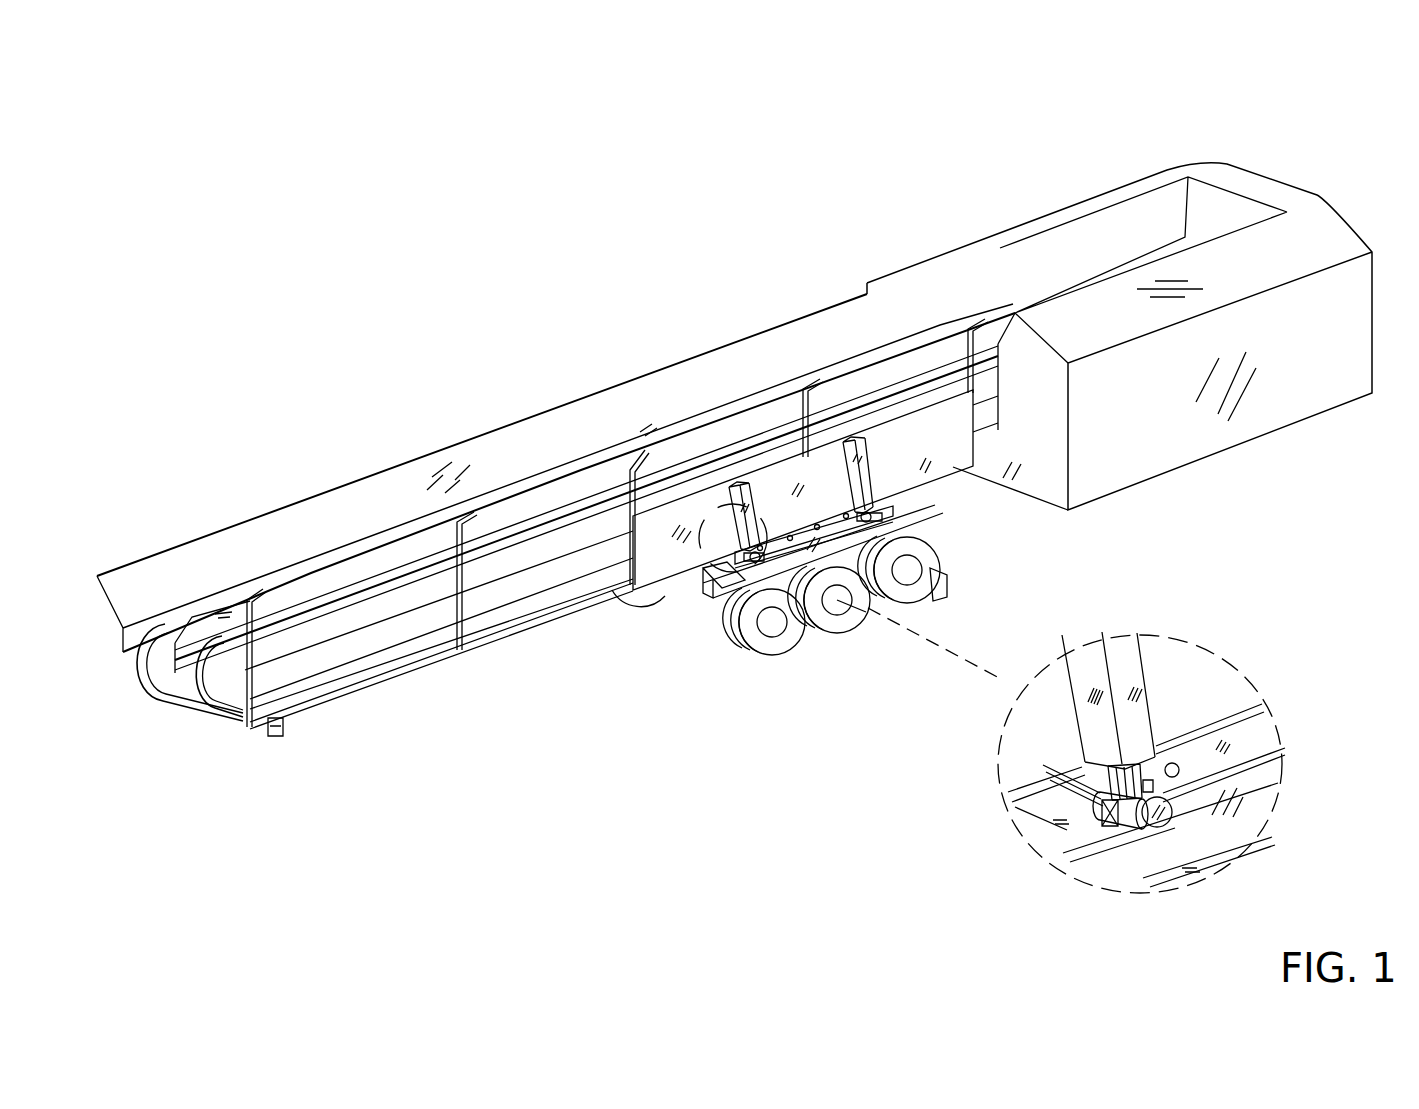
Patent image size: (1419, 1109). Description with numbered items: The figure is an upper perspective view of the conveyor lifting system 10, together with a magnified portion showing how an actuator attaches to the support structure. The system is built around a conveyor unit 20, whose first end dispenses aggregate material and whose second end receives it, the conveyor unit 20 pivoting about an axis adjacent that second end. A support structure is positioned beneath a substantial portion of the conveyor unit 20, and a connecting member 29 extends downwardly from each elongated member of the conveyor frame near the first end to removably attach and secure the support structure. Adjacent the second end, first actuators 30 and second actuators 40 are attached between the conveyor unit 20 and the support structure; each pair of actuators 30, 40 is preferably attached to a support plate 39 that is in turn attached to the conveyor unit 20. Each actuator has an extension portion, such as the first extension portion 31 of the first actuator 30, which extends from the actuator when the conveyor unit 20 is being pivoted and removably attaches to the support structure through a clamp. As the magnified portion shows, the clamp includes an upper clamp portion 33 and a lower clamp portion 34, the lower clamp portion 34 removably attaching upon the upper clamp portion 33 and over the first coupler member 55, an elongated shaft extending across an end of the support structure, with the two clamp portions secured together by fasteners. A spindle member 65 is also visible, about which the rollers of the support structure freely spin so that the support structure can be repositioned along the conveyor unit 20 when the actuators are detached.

The conveyor lifting system 10 is at (545, 419).
The conveyor unit 20 is at (500, 420).
The connecting member 29 is at (281, 731).
The first actuator 30 is at (718, 512).
The first extension portion 31 is at (1082, 767).
The upper clamp portion 33 is at (1100, 822).
The lower clamp portion 34 is at (1108, 835).
The support plate 39 is at (772, 488).
The second actuator 40 is at (882, 478).
The first coupler member 55 is at (1128, 836).
The spindle member 65 is at (1180, 770).